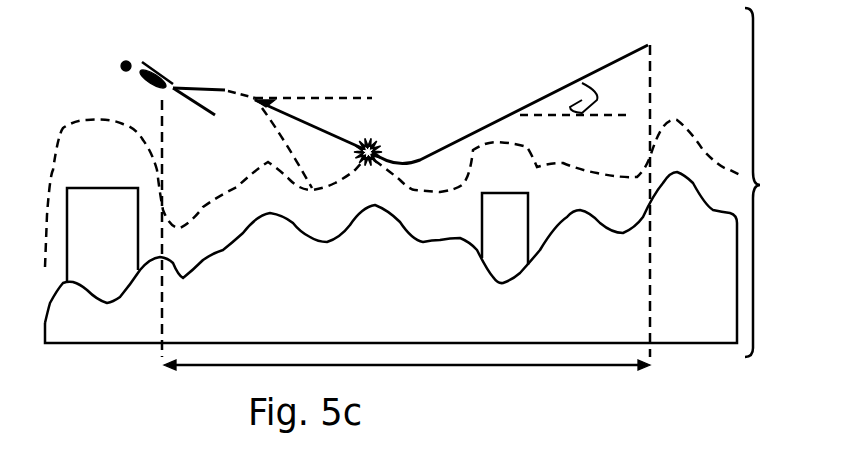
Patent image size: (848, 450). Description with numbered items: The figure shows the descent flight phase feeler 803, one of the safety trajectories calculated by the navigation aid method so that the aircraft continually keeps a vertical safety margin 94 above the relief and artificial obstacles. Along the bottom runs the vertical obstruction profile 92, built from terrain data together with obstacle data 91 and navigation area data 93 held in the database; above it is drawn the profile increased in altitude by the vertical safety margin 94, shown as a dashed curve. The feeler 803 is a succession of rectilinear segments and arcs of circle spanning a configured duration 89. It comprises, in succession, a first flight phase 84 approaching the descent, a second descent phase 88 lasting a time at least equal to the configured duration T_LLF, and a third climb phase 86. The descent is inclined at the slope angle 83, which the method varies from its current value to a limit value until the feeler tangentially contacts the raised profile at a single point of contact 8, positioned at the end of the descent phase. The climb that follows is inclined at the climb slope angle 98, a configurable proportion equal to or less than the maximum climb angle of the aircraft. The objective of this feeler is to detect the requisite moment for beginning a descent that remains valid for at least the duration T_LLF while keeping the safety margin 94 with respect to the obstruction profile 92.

The point of contact 8 is at (373, 140).
The slope angle 83 is at (300, 105).
The first flight phase 84 is at (232, 90).
The third climb phase 86 is at (623, 62).
The second descent phase 88 is at (323, 130).
The configured duration 89 is at (162, 363).
The obstacle data 91 is at (492, 238).
The vertical obstruction profile 92 is at (700, 316).
The navigation area data 93 is at (110, 163).
The vertical safety margin 94 is at (597, 190).
The climb slope angle 98 is at (582, 113).
The descent flight phase feeler 803 is at (777, 182).